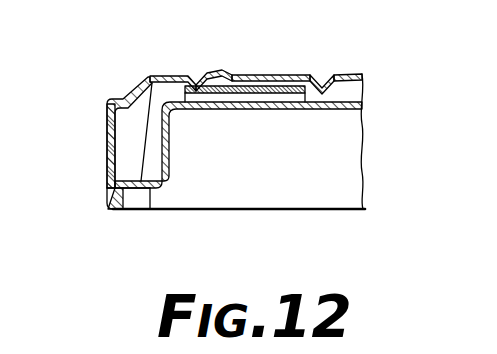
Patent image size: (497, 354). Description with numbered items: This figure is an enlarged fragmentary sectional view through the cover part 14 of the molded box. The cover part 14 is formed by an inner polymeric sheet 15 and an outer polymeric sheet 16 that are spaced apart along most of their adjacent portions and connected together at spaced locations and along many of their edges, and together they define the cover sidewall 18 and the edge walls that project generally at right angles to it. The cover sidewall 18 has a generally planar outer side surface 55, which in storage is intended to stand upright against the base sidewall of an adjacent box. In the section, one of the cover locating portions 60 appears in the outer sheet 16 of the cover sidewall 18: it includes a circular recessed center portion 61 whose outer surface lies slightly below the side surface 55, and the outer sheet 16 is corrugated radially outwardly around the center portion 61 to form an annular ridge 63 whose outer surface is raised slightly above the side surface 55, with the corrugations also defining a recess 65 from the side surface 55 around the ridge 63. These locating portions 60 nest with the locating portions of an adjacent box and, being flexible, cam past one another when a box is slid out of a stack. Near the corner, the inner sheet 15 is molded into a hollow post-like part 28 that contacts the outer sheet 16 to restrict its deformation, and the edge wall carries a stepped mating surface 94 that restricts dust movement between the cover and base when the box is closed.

The cover part 14 is at (318, 211).
The inner polymeric sheet 15 is at (243, 109).
The outer polymeric sheet 16 is at (107, 151).
The cover sidewall 18 is at (362, 73).
The hollow post-like part 28 is at (163, 124).
The outer side surface 55 is at (167, 75).
The cover locating portion 60 is at (305, 109).
The recessed center portion 61 is at (267, 74).
The annular ridge 63 is at (308, 73).
The recess 65 is at (207, 72).
The stepped mating surface 94 is at (147, 210).